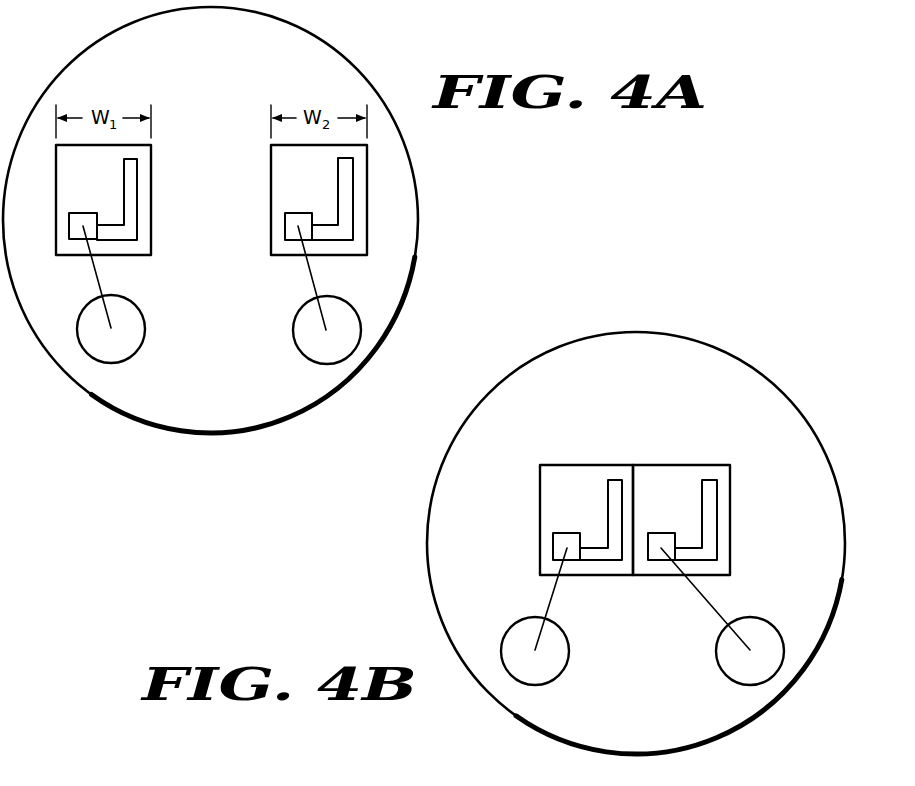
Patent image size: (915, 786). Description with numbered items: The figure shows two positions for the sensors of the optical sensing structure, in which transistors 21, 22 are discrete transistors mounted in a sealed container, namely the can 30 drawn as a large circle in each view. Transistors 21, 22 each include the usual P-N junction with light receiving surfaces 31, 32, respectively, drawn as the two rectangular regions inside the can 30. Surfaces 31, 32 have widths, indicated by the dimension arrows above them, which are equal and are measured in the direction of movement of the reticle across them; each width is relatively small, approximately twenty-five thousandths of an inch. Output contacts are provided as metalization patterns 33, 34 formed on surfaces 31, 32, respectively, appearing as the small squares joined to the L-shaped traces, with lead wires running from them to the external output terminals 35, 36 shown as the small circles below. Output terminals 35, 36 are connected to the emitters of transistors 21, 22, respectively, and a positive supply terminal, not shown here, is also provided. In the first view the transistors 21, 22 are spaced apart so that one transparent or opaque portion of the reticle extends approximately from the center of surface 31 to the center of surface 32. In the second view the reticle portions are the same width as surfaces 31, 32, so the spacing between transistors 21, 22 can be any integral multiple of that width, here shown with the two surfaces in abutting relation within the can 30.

The can 30 is at (224, 78).
The light receiving surface 31 is at (151, 185).
The light receiving surface 32 is at (271, 187).
The metalization pattern 33 is at (82, 220).
The metalization pattern 34 is at (296, 221).
The output terminal 35 is at (146, 330).
The output terminal 36 is at (293, 330).
The transistor 21 is at (169, 255).
The transistor 22 is at (260, 255).